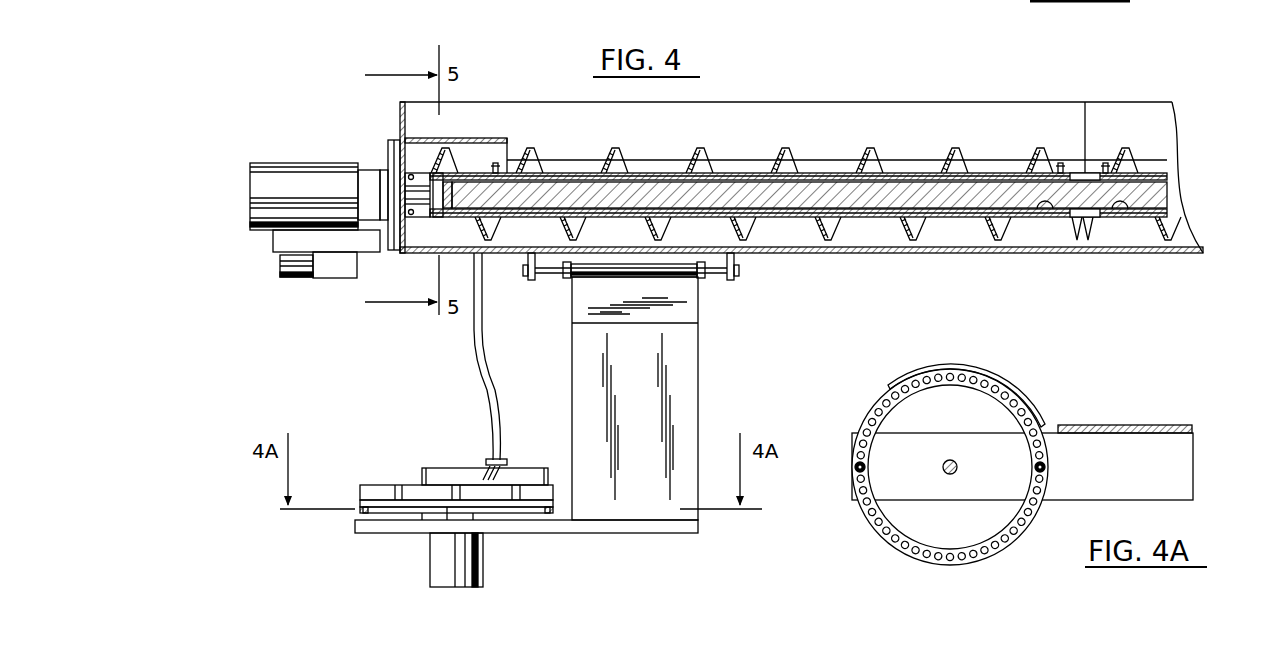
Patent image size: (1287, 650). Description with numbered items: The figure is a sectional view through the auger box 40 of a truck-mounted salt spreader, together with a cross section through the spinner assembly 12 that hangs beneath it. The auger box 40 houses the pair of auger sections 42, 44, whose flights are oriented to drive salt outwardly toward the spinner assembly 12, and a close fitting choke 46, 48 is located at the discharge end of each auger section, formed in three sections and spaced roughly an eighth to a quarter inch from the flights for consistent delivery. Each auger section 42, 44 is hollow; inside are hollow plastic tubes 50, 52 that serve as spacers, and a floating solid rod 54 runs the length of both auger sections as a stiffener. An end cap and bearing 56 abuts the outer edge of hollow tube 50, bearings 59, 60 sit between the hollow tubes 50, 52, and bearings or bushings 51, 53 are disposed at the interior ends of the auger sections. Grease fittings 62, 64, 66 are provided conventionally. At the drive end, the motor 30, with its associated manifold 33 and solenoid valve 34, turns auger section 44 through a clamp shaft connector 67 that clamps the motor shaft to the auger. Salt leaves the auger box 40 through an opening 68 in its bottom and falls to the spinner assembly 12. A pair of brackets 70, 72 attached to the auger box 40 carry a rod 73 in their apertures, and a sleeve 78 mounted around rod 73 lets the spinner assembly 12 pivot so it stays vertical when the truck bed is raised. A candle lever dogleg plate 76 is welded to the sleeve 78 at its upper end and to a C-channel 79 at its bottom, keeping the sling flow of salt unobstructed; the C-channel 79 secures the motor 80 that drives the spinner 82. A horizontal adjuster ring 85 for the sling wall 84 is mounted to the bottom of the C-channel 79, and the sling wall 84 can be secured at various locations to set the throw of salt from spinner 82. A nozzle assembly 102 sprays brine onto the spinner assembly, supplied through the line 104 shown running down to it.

In FIG. 4, the spinner assembly 12 is at (372, 418).
In FIG. 4, the motor 30 is at (318, 185).
In FIG. 4, the manifold 33 is at (292, 240).
In FIG. 4, the solenoid valve 34 is at (325, 268).
In FIG. 4, the auger box 40 is at (868, 254).
In FIG. 4, the auger section 42 is at (1156, 168).
In FIG. 4, the auger section 44 is at (735, 168).
In FIG. 4, the choke 46 is at (806, 194).
In FIG. 4, the choke 48 is at (470, 120).
In FIG. 4, the hollow plastic tube 50 is at (795, 225).
In FIG. 4, the bearing/bushing 51 is at (1082, 172).
In FIG. 4, the hollow plastic tube 52 is at (1168, 205).
In FIG. 4, the bearing/bushing 53 is at (1085, 172).
In FIG. 4, the floating solid rod 54 is at (905, 190).
In FIG. 4, the end cap and bearing 56 is at (470, 176).
In FIG. 4, the bearing 59 is at (1045, 222).
In FIG. 4, the bearing 60 is at (1122, 222).
In FIG. 4, the grease fitting 62 is at (500, 170).
In FIG. 4, the grease fitting 64 is at (1058, 165).
In FIG. 4, the grease fitting 66 is at (1108, 163).
In FIG. 4, the clamp shaft connector 67 is at (413, 180).
In FIG. 4, the opening 68 is at (440, 262).
In FIG. 4, the bracket 70 is at (530, 280).
In FIG. 4, the bracket 72 is at (733, 280).
In FIG. 4, the rod 73 is at (715, 274).
In FIG. 4, the candle lever dogleg plate 76 is at (586, 394).
In FIG. 4A, the candle lever dogleg plate 76 is at (1130, 427).
In FIG. 4, the sleeve 78 is at (587, 270).
In FIG. 4, the C-channel 79 is at (640, 532).
In FIG. 4A, the C-channel 79 is at (1175, 488).
In FIG. 4, the motor 80 is at (438, 556).
In FIG. 4, the spinner 82 is at (385, 490).
In FIG. 4, the sling wall 84 is at (453, 470).
In FIG. 4A, the sling wall 84 is at (980, 378).
In FIG. 4, the horizontal adjuster ring 85 is at (362, 511).
In FIG. 4A, the horizontal adjuster ring 85 is at (886, 540).
In FIG. 4, the nozzle assembly 102 is at (488, 460).
In FIG. 4, the supply tube 104 is at (488, 366).